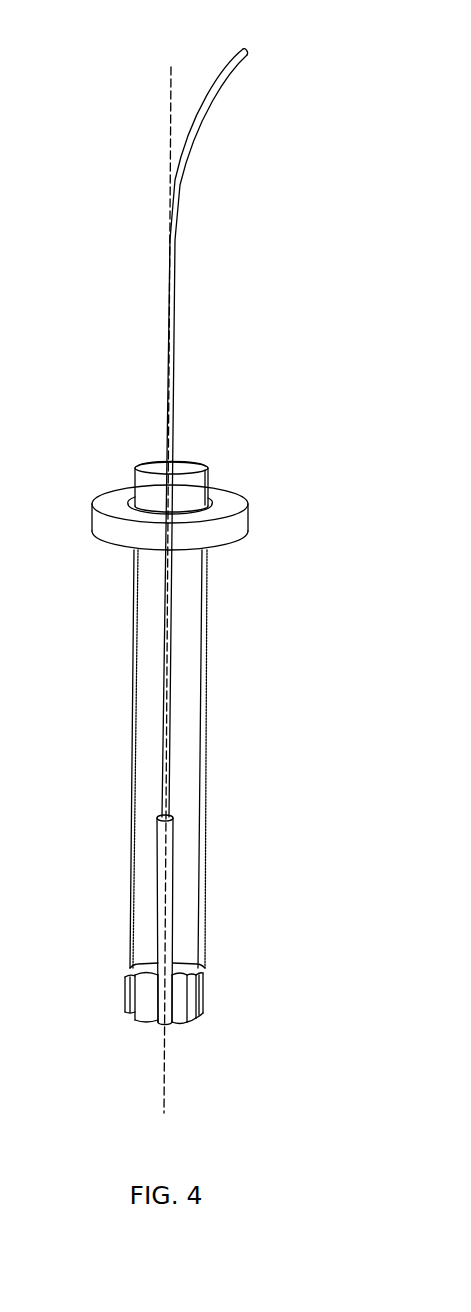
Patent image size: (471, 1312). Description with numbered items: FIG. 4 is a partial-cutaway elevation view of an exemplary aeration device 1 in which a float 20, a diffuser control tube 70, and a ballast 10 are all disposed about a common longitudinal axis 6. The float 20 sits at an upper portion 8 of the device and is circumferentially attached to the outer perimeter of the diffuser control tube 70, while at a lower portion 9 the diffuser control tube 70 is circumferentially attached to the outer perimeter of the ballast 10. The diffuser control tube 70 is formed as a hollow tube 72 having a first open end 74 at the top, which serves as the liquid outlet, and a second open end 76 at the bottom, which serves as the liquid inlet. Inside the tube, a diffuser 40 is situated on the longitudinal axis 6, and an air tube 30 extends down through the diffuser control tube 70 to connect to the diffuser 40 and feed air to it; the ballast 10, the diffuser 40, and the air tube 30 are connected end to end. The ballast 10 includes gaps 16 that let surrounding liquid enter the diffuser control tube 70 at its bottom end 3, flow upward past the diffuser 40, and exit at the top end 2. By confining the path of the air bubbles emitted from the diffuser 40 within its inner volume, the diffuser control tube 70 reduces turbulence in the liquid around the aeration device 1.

The aeration device 1 is at (96, 174).
The top end 2 is at (138, 460).
The bottom end 3 is at (175, 1021).
The longitudinal axis 6 is at (163, 1098).
The upper portion 8 is at (208, 482).
The lower portion 9 is at (205, 993).
The ballast 10 is at (142, 983).
The gaps 16 is at (145, 1018).
The float 20 is at (108, 528).
The air tube 30 is at (171, 312).
The diffuser 40 is at (165, 898).
The diffuser control tube 70 is at (132, 705).
The hollow tube 72 is at (205, 713).
The first open end 74 is at (187, 457).
The second open end 76 is at (196, 1033).